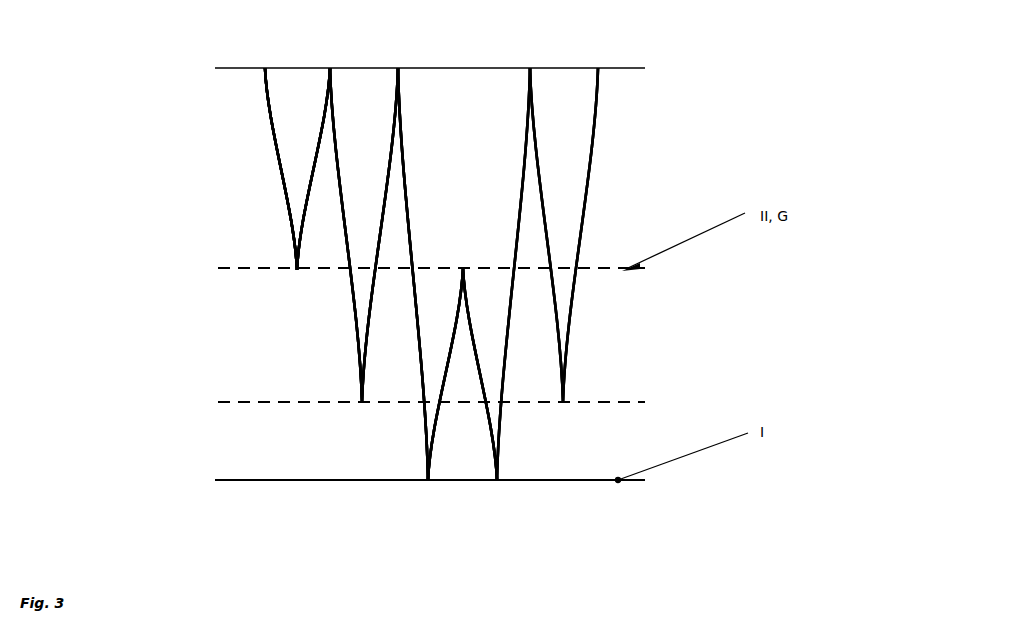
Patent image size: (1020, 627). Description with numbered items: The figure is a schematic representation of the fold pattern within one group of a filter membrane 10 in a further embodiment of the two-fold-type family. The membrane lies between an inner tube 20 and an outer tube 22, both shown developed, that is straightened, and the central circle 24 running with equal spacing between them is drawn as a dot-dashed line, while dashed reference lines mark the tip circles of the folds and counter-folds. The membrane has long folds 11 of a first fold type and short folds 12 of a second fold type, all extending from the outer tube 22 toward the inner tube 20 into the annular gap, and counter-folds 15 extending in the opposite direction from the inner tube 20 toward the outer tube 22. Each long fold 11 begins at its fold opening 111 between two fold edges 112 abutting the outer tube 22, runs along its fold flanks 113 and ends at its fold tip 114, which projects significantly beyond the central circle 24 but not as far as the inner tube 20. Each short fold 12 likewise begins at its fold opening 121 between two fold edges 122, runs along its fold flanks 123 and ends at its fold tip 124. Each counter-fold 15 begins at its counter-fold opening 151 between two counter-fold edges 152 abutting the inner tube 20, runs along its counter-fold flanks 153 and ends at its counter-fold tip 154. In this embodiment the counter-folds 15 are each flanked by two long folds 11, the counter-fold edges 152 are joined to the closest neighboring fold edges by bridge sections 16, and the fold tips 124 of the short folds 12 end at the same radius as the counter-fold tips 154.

The filter membrane 10 is at (283, 215).
The fold of a first fold type 11 is at (566, 131).
The fold of a second fold type 12 is at (297, 229).
The counter-fold 15 is at (465, 294).
The bridge section 16 is at (414, 338).
The inner tube 20 is at (215, 480).
The outer tube 22 is at (215, 68).
The central circle 24 is at (640, 268).
The fold opening 111 is at (367, 82).
The fold edge 112 is at (398, 68).
The fold flank 113 is at (383, 181).
The fold tip 114 is at (362, 402).
The fold opening 121 is at (293, 82).
The fold edge 122 is at (265, 68).
The fold flank 123 is at (310, 201).
The fold tip 124 is at (297, 270).
The counter-fold opening 151 is at (462, 457).
The counter-fold edge 152 is at (428, 480).
The counter-fold flank 153 is at (445, 377).
The counter-fold tip 154 is at (463, 268).